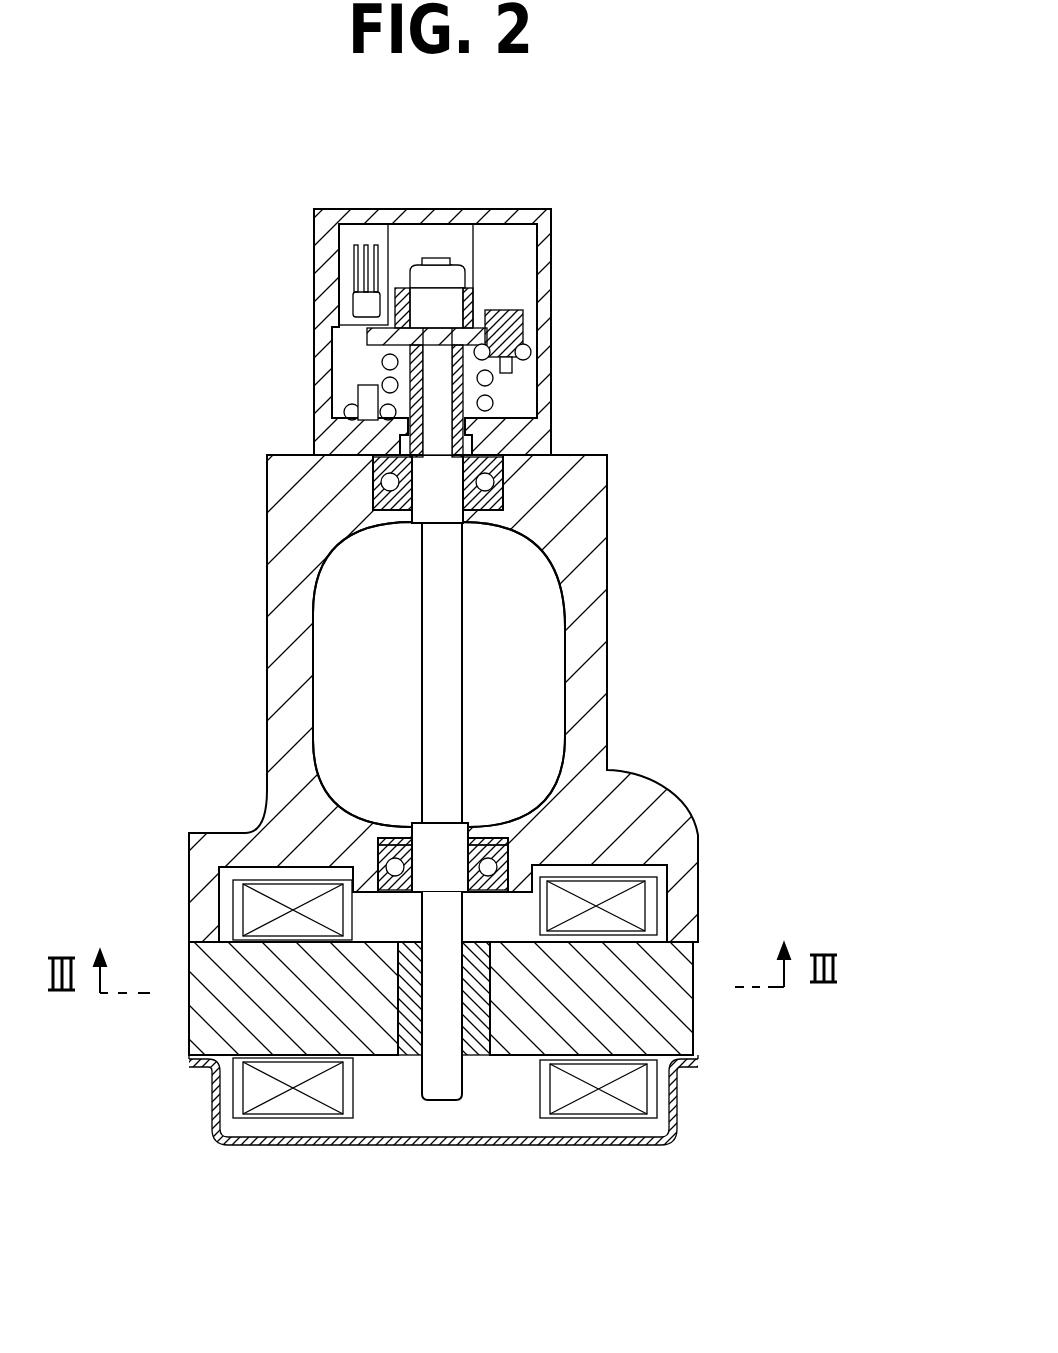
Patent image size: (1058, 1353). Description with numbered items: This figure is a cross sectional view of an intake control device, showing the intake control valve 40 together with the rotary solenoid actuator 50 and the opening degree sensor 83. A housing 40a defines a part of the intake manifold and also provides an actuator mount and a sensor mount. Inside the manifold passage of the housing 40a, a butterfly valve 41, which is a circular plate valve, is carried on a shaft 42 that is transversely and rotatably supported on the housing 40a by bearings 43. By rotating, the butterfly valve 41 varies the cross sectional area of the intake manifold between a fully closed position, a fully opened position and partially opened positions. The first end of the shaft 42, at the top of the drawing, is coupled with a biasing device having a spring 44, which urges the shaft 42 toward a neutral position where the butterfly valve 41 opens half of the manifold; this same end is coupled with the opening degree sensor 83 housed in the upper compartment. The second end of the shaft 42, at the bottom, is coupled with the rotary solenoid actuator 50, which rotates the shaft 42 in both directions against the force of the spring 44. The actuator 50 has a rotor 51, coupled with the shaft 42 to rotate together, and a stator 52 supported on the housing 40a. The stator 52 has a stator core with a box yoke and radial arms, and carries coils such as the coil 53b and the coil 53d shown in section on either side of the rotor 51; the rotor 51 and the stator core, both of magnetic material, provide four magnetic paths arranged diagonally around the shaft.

The intake control valve 40 is at (495, 575).
The housing 40a is at (628, 578).
The butterfly valve 41 is at (373, 642).
The shaft 42 is at (433, 703).
The bearings 43 is at (505, 476).
The spring 44 is at (488, 382).
The opening degree sensor 83 is at (363, 306).
The rotary solenoid actuator 50 is at (538, 1039).
The rotor 51 is at (478, 1100).
The stator 52 is at (695, 1030).
The coil 53b is at (630, 1088).
The coil 53d is at (289, 1103).